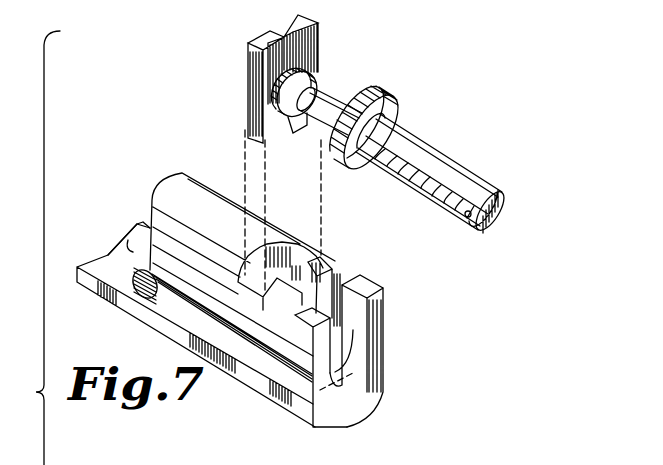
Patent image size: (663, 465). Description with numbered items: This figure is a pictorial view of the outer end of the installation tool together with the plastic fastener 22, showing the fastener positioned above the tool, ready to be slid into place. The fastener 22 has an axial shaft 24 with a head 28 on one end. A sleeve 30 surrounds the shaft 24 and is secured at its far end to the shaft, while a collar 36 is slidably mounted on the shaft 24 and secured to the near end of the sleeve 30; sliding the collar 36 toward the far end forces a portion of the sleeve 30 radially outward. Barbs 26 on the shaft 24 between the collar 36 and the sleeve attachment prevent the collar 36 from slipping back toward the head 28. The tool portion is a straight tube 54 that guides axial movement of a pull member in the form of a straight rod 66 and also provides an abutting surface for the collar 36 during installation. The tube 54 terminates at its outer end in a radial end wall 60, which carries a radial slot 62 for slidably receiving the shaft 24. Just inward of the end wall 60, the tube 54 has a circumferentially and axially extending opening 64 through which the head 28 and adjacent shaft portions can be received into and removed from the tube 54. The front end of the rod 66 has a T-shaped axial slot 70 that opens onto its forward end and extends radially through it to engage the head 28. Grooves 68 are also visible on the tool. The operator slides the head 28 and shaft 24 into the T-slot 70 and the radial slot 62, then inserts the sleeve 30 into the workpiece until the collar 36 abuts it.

The plastic fastener 22 is at (456, 138).
The sleeve 30 is at (480, 187).
The barbs 26 is at (413, 170).
The collar 36 is at (380, 86).
The axial shaft 24 is at (338, 90).
The head 28 is at (278, 30).
The grooves 68 is at (257, 347).
The tube 54 is at (112, 303).
The pull member (straight rod) 66 is at (198, 180).
The opening 64 is at (133, 250).
The axial slot (T-slot) 70 is at (330, 257).
The radial end wall 60 is at (308, 342).
The radial slot 62 is at (353, 347).